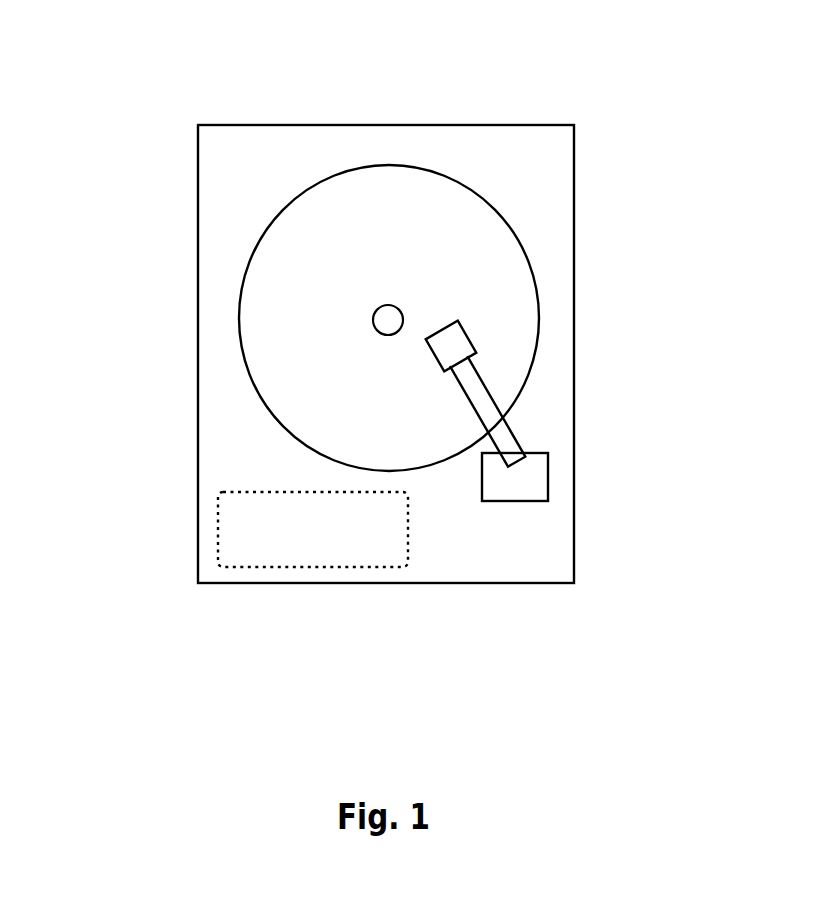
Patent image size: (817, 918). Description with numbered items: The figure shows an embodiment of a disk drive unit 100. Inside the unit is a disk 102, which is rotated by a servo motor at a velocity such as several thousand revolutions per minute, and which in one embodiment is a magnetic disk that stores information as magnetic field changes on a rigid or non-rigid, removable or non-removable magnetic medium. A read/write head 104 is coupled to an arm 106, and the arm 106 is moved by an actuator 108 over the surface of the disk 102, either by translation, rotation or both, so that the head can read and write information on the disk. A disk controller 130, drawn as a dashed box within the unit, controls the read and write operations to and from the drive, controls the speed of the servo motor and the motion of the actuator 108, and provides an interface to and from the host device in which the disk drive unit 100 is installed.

The disk drive unit 100 is at (622, 82).
The disk 102 is at (295, 198).
The read/write head 104 is at (476, 351).
The arm 106 is at (494, 398).
The actuator 108 is at (482, 484).
The disk controller 130 is at (333, 554).